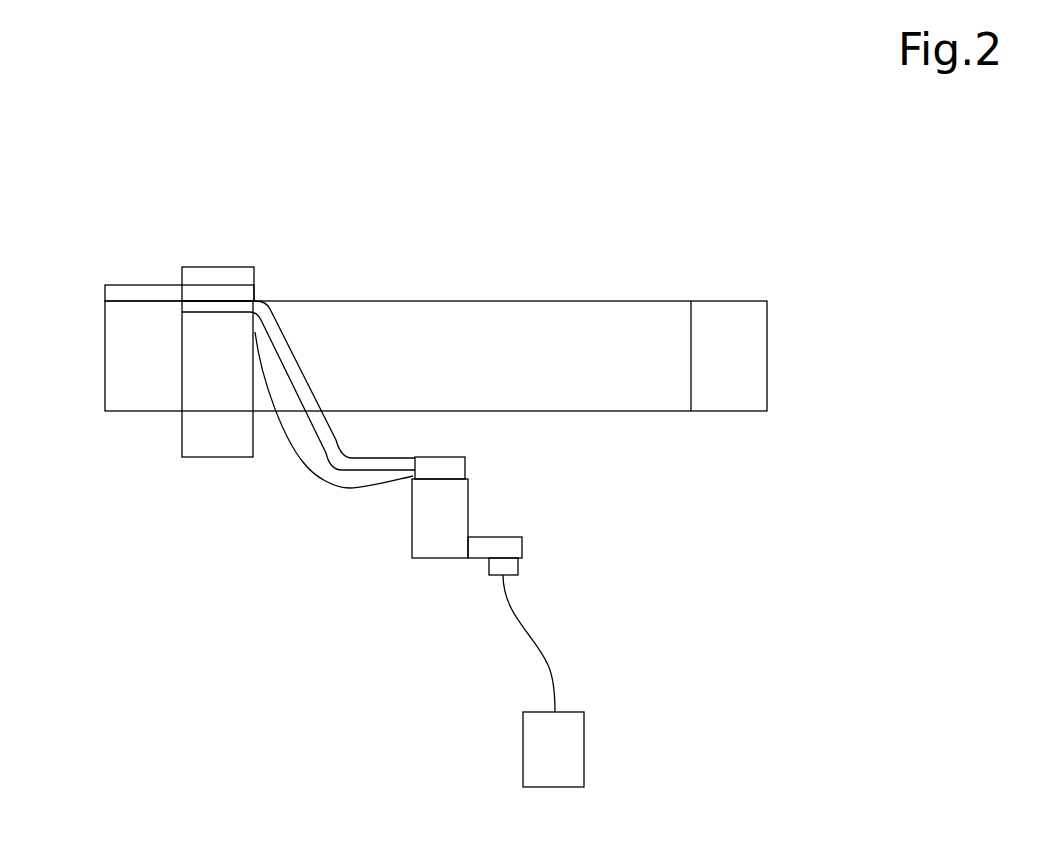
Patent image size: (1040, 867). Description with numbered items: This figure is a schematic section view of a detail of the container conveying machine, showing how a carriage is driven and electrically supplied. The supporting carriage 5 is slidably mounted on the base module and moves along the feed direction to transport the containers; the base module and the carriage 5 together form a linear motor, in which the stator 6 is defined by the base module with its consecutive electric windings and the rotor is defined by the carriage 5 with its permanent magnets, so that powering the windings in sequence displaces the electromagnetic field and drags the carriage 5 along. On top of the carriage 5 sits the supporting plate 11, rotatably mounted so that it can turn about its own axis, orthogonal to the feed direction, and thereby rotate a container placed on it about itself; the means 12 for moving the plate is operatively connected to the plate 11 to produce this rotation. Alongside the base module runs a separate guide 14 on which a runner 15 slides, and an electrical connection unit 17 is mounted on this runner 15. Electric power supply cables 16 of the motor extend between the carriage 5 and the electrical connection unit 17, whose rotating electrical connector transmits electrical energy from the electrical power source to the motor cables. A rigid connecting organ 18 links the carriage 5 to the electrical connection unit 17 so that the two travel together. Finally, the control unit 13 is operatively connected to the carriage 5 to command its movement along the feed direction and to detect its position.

The supporting carriage 5 is at (135, 285).
The stator 6 is at (768, 345).
The supporting plate 11 is at (212, 267).
The means for moving the plate 12 is at (200, 462).
The control unit 13 is at (565, 748).
The guide 14 is at (523, 573).
The runner 15 is at (525, 543).
The electric power supply cables 16 is at (303, 462).
The electrical connection unit 17 is at (467, 463).
The rigid connecting organ 18 is at (303, 377).